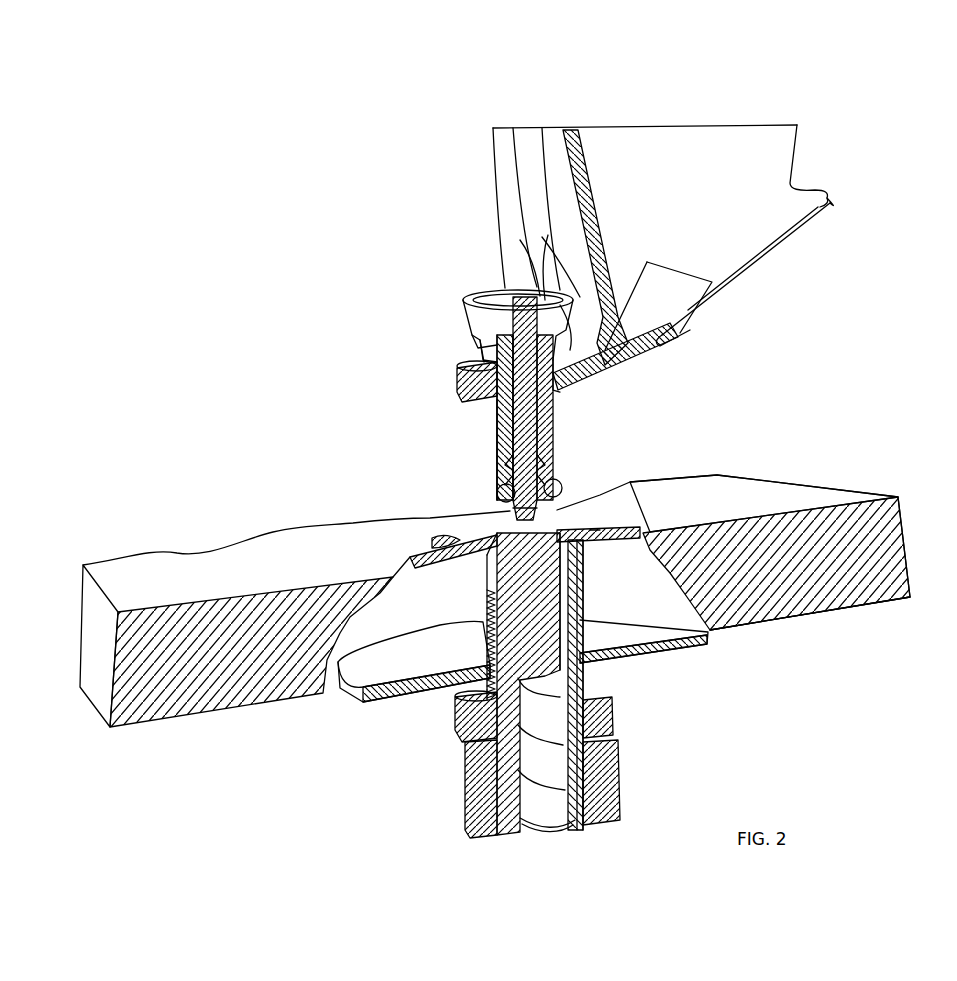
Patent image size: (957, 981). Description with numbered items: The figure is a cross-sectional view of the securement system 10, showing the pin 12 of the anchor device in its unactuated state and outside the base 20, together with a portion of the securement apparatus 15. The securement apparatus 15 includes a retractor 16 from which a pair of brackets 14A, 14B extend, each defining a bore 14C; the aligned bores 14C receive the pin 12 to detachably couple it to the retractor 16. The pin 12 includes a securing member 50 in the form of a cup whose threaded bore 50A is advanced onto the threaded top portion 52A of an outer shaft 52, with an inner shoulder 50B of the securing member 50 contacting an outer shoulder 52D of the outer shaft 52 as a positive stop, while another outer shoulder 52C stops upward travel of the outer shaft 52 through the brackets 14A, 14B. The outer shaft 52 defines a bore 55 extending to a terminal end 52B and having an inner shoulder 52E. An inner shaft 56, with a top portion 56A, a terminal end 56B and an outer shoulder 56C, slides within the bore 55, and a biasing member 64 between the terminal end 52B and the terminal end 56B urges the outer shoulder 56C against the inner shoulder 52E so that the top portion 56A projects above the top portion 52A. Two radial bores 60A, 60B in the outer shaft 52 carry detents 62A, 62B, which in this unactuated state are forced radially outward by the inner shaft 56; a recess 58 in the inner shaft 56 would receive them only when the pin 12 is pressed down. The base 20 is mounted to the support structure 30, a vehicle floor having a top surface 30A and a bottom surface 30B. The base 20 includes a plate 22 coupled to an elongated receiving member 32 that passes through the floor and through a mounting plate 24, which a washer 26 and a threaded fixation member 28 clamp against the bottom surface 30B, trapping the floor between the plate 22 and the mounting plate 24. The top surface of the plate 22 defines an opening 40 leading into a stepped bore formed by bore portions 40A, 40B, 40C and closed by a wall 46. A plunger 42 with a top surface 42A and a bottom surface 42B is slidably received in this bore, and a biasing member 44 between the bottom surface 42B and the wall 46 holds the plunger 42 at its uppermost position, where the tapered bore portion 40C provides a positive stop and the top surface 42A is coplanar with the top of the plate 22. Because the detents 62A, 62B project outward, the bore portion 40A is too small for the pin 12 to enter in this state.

The securement system 10 is at (294, 276).
The pin 12 is at (392, 456).
The bracket 14A is at (650, 340).
The bracket 14B is at (580, 180).
The bore 14C is at (460, 386).
The securement apparatus 15 is at (846, 220).
The retractor 16 is at (798, 150).
The base 20 is at (400, 746).
The plate 22 is at (425, 545).
The mounting plate 24 is at (710, 637).
The washer 26 is at (613, 715).
The fixation member 28 is at (620, 790).
The support structure 30 is at (832, 478).
The top surface 30A is at (744, 511).
The bottom surface 30B is at (840, 608).
The receiving member 32 is at (578, 683).
The opening 40 is at (573, 533).
The bore portion 40A is at (560, 590).
The bore portion 40B is at (590, 770).
The bore portion 40C is at (490, 640).
The plunger 42 is at (556, 628).
The top surface 42A is at (486, 580).
The bottom surface 42B is at (518, 680).
The biasing member 44 is at (500, 800).
The wall 46 is at (555, 826).
The securing member 50 is at (465, 305).
The bore 50A is at (478, 340).
The inner shoulder 50B is at (486, 359).
The outer shaft 52 is at (554, 418).
The top portion 52A is at (545, 300).
The terminal end 52B is at (430, 543).
The outer shoulder 52C is at (560, 385).
The outer shoulder 52D is at (560, 292).
The inner shoulder 52E is at (496, 411).
The bore 55 is at (515, 432).
The inner shaft 56 is at (540, 450).
The top portion 56A is at (512, 295).
The terminal end 56B is at (510, 512).
The outer shoulder 56C is at (585, 320).
The recess 58 is at (510, 462).
The radial bore 60A is at (508, 478).
The radial bore 60B is at (550, 472).
The detent 62A is at (500, 497).
The detent 62B is at (560, 497).
The biasing member 64 is at (598, 535).